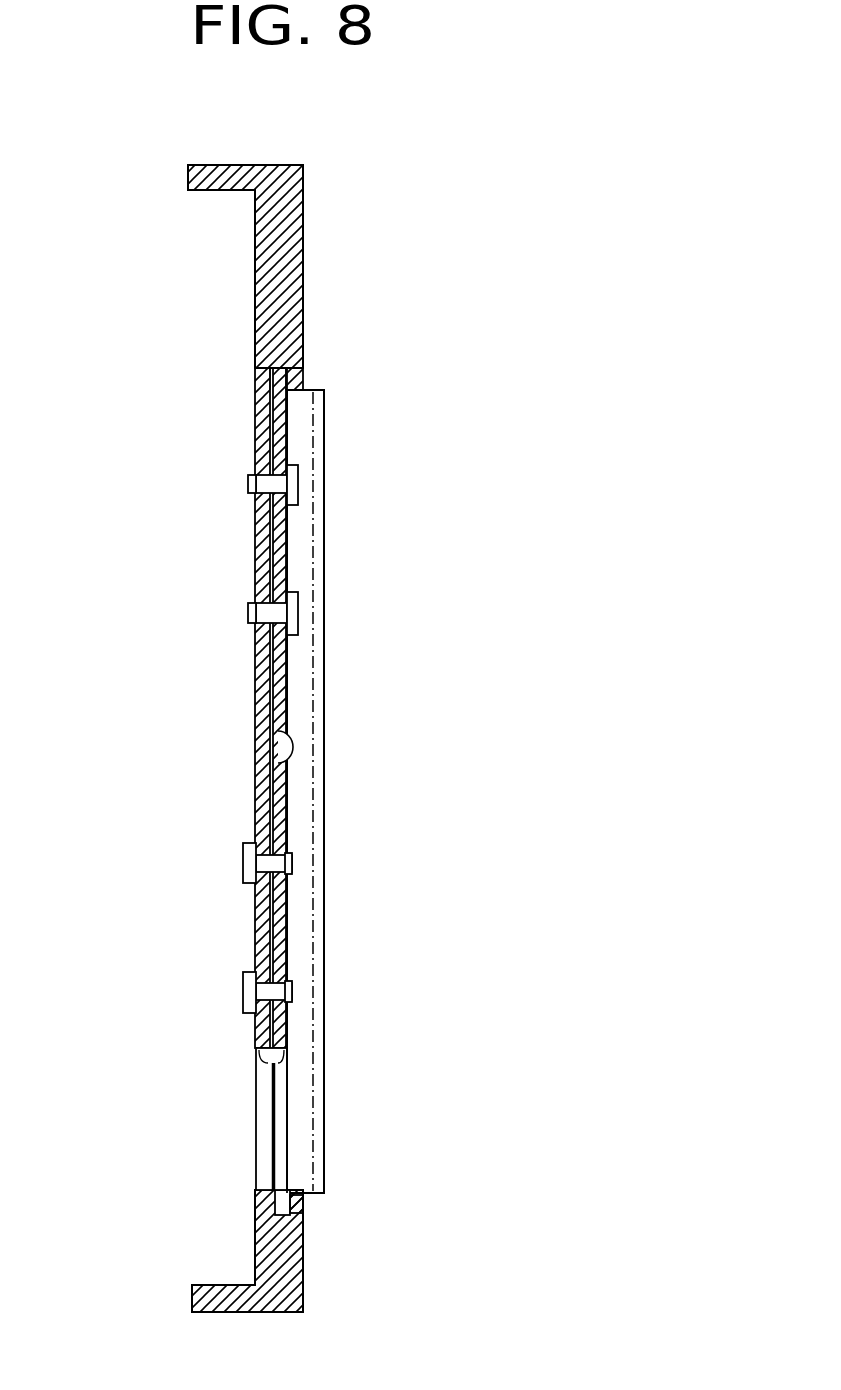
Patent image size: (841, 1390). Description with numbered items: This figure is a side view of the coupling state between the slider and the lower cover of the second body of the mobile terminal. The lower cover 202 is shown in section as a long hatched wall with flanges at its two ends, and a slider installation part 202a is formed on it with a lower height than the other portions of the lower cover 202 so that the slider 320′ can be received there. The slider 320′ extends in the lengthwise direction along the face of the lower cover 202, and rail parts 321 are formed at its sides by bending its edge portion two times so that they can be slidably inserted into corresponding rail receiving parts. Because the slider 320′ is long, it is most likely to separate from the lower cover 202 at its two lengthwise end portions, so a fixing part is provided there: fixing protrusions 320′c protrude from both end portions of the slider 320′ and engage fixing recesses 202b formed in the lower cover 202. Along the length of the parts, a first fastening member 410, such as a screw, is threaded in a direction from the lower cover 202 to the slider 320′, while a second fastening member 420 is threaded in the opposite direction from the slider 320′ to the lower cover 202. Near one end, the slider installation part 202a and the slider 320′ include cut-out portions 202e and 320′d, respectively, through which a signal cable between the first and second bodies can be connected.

The lower cover 202 is at (303, 246).
The slider installation part 202a is at (262, 731).
The fixing recesses 202b is at (254, 381).
The cut-out portion 202e is at (257, 1071).
The slider 320′ is at (300, 817).
The fixing protrusions 320′c is at (303, 371).
The cut-out portion 320′d is at (288, 1073).
The rail parts 321 is at (318, 941).
The first fastening member 410 is at (243, 988).
The second fastening member 420 is at (298, 615).